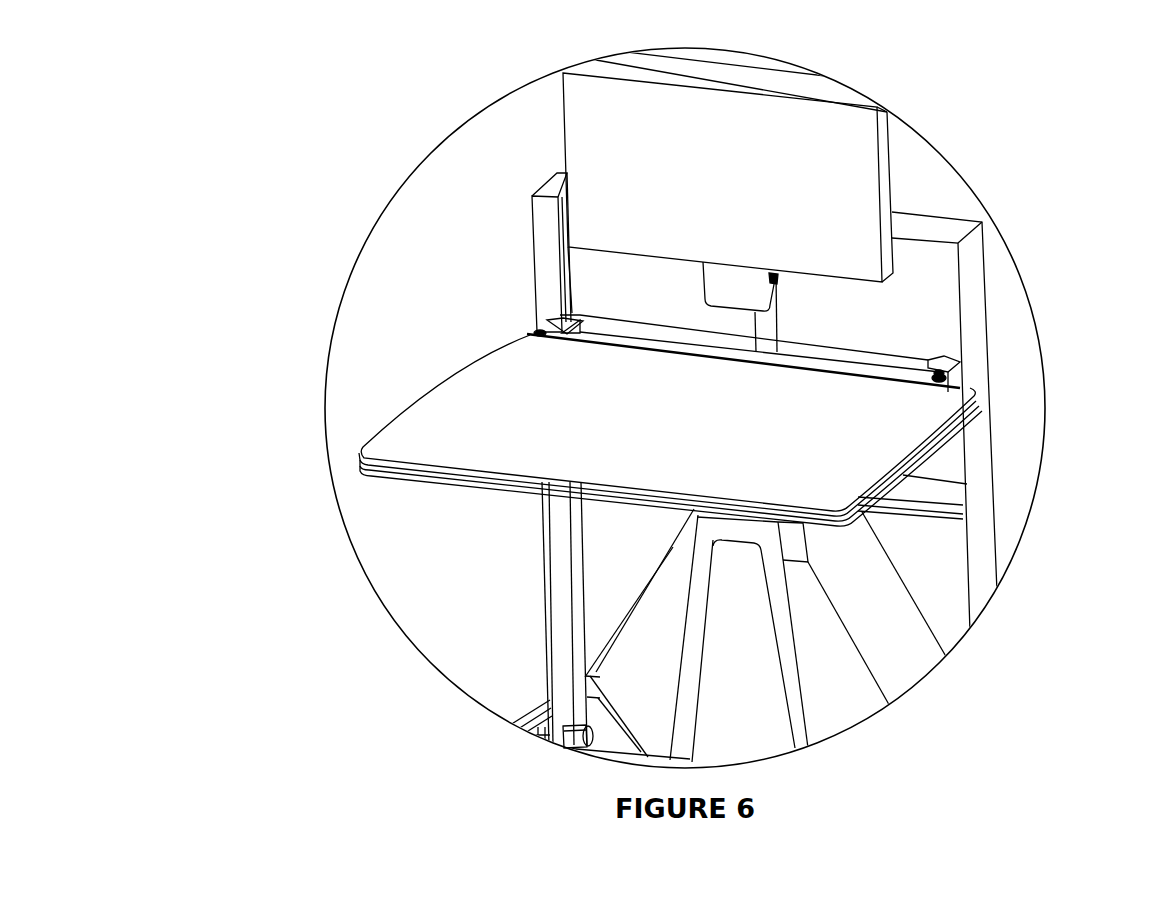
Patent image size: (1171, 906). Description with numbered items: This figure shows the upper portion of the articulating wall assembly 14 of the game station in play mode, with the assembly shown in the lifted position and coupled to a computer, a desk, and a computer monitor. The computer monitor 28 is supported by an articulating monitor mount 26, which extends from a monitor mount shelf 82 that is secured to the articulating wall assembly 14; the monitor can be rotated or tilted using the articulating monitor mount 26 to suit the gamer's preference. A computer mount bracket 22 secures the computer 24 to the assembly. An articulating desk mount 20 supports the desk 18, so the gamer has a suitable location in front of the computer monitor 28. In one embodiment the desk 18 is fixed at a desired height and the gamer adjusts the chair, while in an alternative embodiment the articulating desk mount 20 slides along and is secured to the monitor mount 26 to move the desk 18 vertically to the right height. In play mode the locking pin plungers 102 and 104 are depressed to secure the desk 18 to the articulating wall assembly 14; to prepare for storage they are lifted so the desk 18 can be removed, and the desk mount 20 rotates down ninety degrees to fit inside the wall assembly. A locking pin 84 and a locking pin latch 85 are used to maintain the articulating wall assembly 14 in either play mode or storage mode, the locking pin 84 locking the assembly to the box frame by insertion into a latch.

The computer monitor 28 is at (648, 128).
The articulating wall assembly 14 is at (540, 233).
The articulating monitor mount 26 is at (768, 332).
The articulating desk mount 20 is at (962, 380).
The locking pin plunger 104 is at (527, 333).
The locking pin plunger 102 is at (958, 386).
The desk 18 is at (427, 423).
The monitor mount shelf 82 is at (933, 488).
The computer mount bracket 22 is at (797, 698).
The computer 24 is at (880, 632).
The locking pin latch 85 is at (512, 730).
The locking pin 84 is at (556, 745).